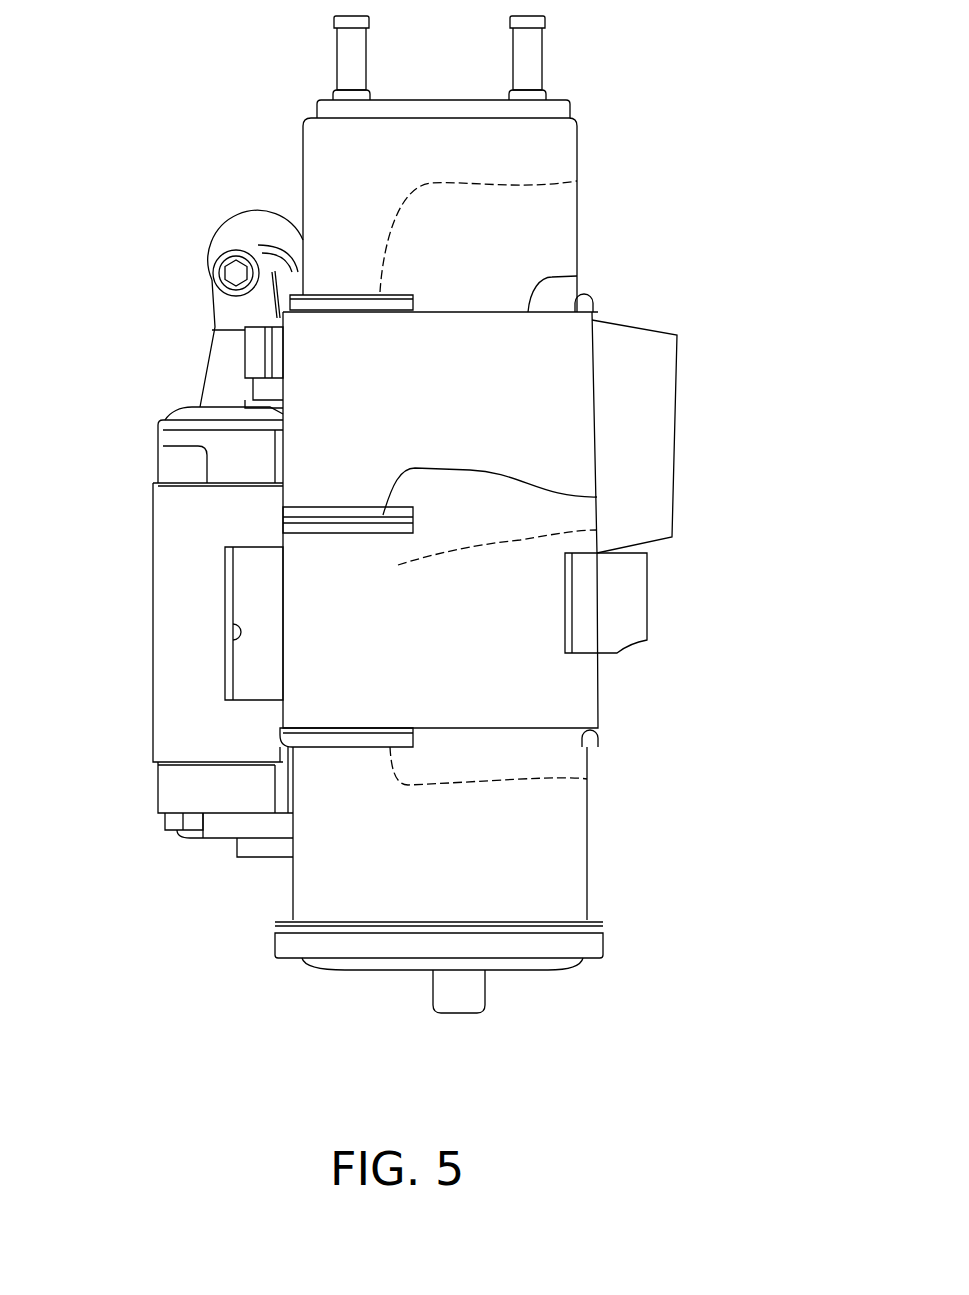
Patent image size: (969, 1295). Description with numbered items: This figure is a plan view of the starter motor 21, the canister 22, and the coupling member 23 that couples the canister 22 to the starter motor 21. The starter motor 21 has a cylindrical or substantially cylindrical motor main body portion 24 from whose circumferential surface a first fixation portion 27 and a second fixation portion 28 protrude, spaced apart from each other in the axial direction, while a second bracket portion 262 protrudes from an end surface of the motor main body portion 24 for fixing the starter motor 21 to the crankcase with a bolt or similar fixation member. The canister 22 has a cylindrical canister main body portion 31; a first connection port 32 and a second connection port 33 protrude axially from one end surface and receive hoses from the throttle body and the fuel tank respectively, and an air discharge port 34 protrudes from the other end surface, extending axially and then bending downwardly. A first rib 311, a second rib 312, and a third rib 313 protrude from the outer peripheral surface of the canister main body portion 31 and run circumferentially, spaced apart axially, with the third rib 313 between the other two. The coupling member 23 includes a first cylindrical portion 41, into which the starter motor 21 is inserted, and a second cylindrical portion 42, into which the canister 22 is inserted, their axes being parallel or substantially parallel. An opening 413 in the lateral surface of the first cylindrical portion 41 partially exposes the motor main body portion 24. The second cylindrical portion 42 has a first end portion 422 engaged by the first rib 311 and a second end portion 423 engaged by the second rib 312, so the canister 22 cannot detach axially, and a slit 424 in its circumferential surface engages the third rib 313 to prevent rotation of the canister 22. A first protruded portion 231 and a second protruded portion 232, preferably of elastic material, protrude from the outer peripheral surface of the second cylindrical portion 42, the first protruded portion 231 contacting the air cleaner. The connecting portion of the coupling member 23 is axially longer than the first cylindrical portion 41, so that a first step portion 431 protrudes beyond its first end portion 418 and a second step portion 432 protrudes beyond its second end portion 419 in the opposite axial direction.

The starter motor 21 is at (134, 409).
The canister 22 is at (586, 247).
The coupling member 23 is at (622, 666).
The motor main body portion 24 is at (243, 670).
The first fixation portion 27 is at (210, 793).
The second fixation portion 28 is at (168, 470).
The canister main body portion 31 is at (558, 207).
The first connection port 32 is at (350, 43).
The second connection port 33 is at (540, 40).
The air discharge port 34 is at (465, 1013).
The first cylindrical portion 41 is at (172, 580).
The second cylindrical portion 42 is at (585, 395).
The first protruded portion 231 is at (640, 593).
The second protruded portion 232 is at (657, 445).
The second bracket portion 262 is at (236, 250).
The first rib 311 is at (587, 779).
The second rib 312 is at (577, 181).
The third rib 313 is at (597, 497).
The opening 413 is at (225, 638).
The first end portion 418 is at (197, 765).
The second end portion 419 is at (163, 446).
The first end portion 422 is at (538, 730).
The second end portion 423 is at (577, 276).
The slit 424 is at (597, 530).
The first step portion 431 is at (272, 788).
The second step portion 432 is at (270, 458).